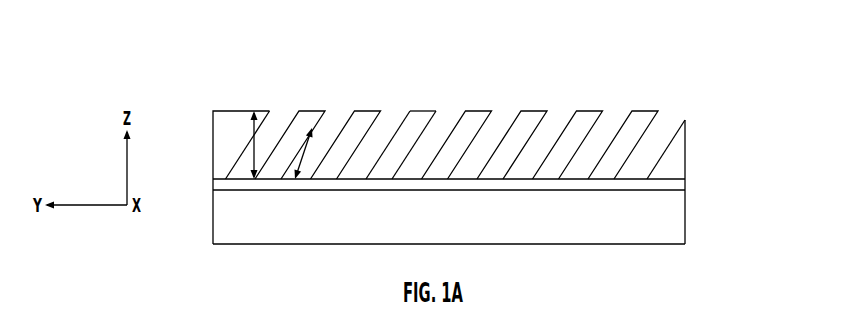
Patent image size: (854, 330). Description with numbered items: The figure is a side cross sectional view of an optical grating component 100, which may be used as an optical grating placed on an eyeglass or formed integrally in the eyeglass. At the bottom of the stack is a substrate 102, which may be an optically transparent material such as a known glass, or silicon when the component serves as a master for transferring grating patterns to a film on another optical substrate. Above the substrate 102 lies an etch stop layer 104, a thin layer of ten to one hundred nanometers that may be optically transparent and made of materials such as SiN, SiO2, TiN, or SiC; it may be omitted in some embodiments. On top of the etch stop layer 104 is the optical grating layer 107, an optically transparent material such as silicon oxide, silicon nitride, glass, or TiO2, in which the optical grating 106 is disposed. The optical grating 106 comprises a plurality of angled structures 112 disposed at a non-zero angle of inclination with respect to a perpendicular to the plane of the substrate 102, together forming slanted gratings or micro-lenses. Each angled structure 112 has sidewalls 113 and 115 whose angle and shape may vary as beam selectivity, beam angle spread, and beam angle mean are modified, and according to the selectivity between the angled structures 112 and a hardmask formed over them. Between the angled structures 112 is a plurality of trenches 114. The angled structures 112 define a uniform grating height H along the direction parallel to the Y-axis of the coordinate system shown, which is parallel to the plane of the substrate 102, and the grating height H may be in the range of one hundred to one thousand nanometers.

The optical grating component 100 is at (160, 57).
The substrate 102 is at (216, 233).
The etch stop layer 104 is at (216, 181).
The optical grating 106 is at (216, 131).
The optical grating layer 107 is at (688, 113).
The angled structures 112 is at (475, 120).
The sidewall 113 is at (403, 123).
The trenches 114 is at (647, 156).
The sidewall 115 is at (433, 129).